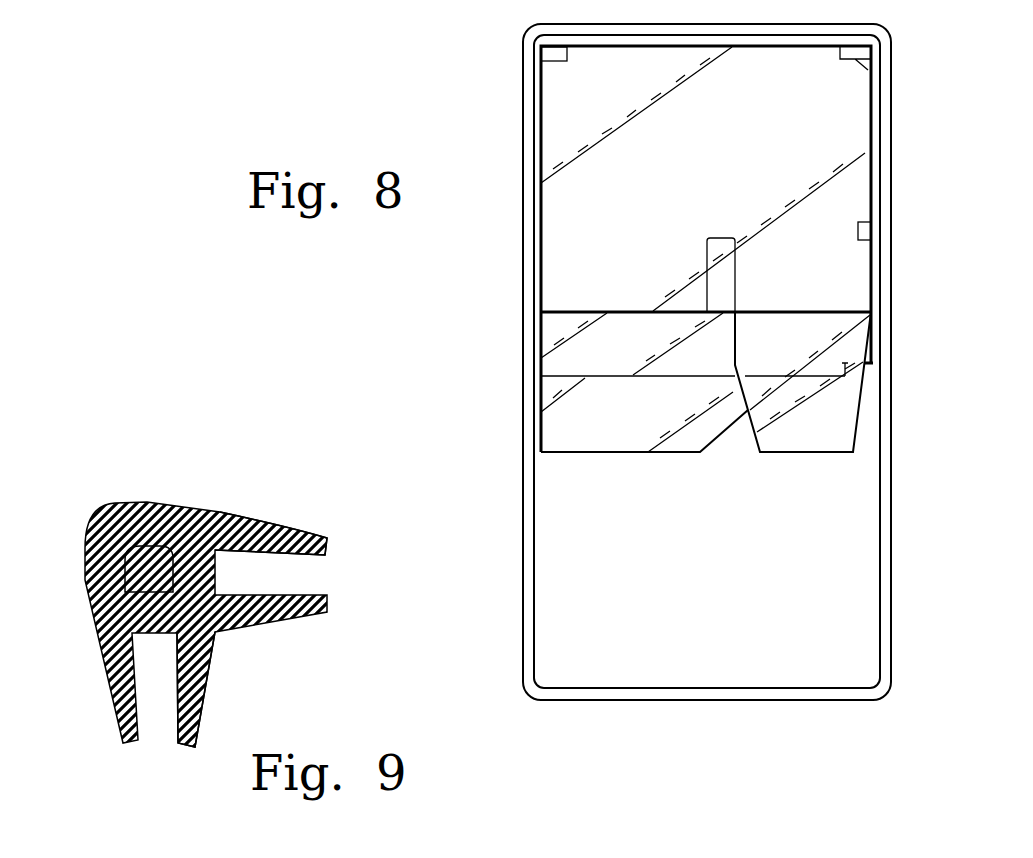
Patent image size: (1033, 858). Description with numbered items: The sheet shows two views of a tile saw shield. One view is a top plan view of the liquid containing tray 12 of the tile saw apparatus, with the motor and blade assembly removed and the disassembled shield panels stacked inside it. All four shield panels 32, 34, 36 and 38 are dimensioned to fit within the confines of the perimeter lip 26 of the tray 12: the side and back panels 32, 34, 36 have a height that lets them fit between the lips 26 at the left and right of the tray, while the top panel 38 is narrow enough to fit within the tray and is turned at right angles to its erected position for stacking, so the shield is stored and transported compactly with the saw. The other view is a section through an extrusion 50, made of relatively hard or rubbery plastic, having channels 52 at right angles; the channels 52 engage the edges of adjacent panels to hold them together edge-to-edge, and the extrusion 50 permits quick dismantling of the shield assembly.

In FIG. 8, the liquid containing tray 12 is at (522, 38).
In FIG. 8, the perimeter lip 26 is at (521, 218).
In FIG. 8, the top panel 38 is at (567, 123).
In FIG. 8, the shield panel 34 is at (558, 332).
In FIG. 8, the shield panel 36 is at (567, 435).
In FIG. 8, the shield panel 32 is at (842, 420).
In FIG. 9, the extrusion 50 is at (163, 502).
In FIG. 9, the channels 52 is at (287, 572).